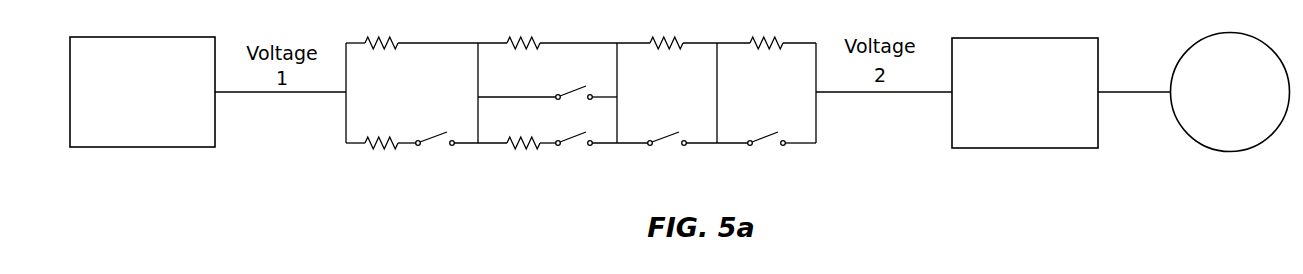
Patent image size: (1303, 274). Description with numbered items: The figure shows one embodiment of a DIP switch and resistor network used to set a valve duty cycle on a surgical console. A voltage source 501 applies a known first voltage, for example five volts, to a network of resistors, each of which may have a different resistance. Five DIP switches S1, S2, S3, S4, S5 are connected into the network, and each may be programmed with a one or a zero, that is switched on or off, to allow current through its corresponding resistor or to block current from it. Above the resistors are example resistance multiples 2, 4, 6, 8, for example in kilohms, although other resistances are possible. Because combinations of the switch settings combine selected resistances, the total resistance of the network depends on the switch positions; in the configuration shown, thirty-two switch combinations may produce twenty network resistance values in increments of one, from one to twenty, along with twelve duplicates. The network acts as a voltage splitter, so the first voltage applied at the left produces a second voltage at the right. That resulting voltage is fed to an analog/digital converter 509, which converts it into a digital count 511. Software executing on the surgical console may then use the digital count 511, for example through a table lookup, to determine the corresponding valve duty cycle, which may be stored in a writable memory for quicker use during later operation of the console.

The voltage source 501 is at (142, 92).
The analog/digital converter 509 is at (1025, 93).
The digital count 511 is at (1230, 92).
The example resistance multiple 2 is at (381, 81).
The example resistance multiple 4 is at (523, 81).
The example resistance multiple 6 is at (666, 31).
The example resistance multiple 8 is at (766, 31).
The DIP switch S1 is at (435, 129).
The DIP switch S2 is at (574, 129).
The DIP switch S3 is at (574, 82).
The DIP switch S4 is at (667, 129).
The DIP switch S5 is at (767, 129).